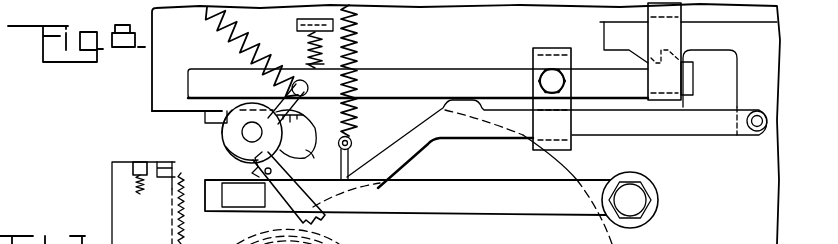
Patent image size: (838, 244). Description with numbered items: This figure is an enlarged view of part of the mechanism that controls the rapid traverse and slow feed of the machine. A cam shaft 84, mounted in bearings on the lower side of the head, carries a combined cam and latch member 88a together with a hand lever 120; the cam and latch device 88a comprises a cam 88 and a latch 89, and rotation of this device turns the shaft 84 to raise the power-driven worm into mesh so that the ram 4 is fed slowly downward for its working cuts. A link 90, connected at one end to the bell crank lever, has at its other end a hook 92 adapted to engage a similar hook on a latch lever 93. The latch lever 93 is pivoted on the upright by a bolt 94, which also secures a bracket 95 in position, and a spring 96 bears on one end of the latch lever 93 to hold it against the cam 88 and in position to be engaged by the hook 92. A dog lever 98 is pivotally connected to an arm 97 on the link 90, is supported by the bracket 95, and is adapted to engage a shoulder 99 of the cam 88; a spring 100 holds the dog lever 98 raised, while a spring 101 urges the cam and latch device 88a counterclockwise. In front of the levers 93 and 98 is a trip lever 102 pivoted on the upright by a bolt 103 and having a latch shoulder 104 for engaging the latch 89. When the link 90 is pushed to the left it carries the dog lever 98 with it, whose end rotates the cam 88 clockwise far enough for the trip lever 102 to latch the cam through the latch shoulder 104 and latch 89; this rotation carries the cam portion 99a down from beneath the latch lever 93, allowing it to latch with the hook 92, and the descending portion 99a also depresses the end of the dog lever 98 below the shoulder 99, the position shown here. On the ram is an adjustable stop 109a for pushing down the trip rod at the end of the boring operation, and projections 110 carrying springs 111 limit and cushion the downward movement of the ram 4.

The ram 4 is at (122, 206).
The cam shaft 84 is at (250, 123).
The cam 88 is at (308, 130).
The combined cam and latch member 88a is at (228, 148).
The latch 89 is at (245, 165).
The link 90 is at (707, 35).
The hook or latch 92 is at (638, 55).
The latch lever 93 is at (422, 72).
The bolt 94 is at (548, 78).
The bracket 95 is at (543, 50).
The spring 96 is at (303, 50).
The arm 97 is at (745, 87).
The dog lever 98 is at (405, 155).
The shoulder 99 is at (262, 168).
The cam portion 99a is at (312, 155).
The spring 100 is at (358, 28).
The spring 101 is at (220, 35).
The trip lever 102 is at (480, 207).
The bolt 103 is at (640, 203).
The latch shoulder 104 is at (268, 174).
The adjustable stop 109a is at (163, 165).
The projections 110 is at (133, 172).
The springs 111 is at (133, 186).
The hand lever 120 is at (323, 220).